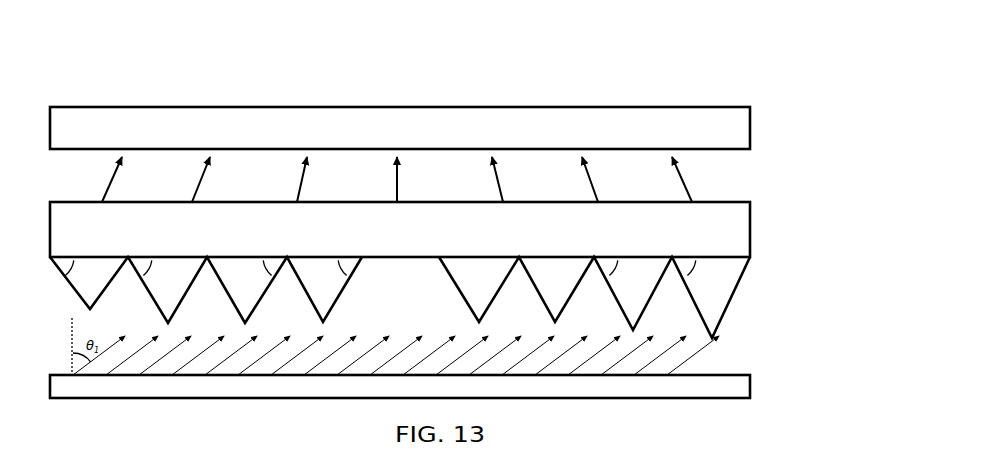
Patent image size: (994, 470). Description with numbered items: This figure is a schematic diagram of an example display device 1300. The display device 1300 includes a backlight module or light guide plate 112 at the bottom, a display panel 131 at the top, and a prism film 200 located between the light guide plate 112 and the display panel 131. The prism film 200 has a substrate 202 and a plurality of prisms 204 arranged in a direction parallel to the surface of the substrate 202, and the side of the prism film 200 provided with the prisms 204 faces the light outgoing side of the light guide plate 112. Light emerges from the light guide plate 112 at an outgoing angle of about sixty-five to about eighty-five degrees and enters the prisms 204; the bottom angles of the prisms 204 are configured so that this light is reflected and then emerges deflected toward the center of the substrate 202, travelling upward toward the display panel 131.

The display device 1300 is at (108, 82).
The display panel 131 is at (641, 105).
The substrate 202 is at (707, 207).
The prism film 200 is at (440, 262).
The prisms 204 is at (722, 297).
The light guide plate 112 is at (725, 387).